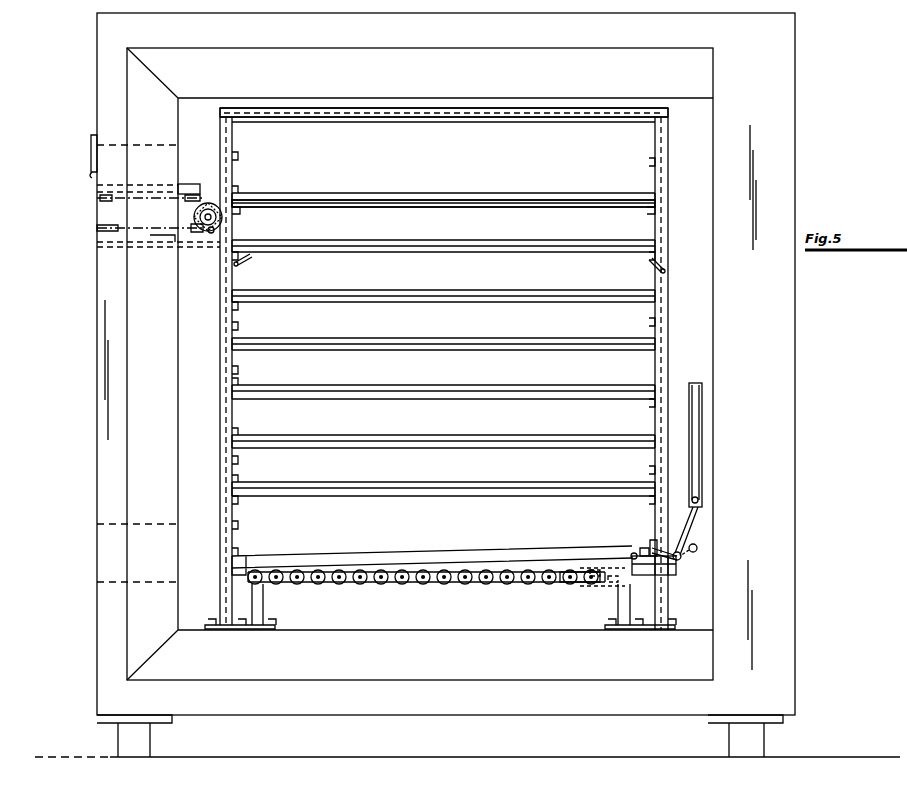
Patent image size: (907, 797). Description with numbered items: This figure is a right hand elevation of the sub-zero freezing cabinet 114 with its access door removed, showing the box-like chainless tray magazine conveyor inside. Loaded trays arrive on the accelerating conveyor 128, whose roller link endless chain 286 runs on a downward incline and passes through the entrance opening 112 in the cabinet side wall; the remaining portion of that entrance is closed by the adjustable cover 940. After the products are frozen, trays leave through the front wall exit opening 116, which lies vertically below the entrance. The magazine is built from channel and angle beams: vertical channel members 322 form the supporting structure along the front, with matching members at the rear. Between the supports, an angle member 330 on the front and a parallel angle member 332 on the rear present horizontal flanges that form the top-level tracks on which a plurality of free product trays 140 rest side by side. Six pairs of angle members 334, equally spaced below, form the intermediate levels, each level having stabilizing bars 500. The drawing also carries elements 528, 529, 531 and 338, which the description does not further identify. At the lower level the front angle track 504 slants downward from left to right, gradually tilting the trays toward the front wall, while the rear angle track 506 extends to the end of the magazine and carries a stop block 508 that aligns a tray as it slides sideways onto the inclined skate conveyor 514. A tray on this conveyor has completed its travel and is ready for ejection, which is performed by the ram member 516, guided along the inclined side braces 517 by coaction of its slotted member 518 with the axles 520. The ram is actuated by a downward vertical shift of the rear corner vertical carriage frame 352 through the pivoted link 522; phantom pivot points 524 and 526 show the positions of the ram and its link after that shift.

The sub-zero freezing cabinet 114 is at (80, 58).
The entrance opening 112 is at (148, 152).
The front wall exit opening 116 is at (148, 527).
The adjustable cover 940 is at (91, 142).
The roller link type endless chain 286 is at (118, 203).
The accelerating conveyor 128 is at (193, 249).
The vertical channel member 322 is at (220, 424).
The rack top bar 528 is at (446, 108).
The product tray 140 is at (189, 184).
The tray support bracket 531 is at (234, 154).
The stabilizing bars 500 is at (234, 188).
The angle members 334 is at (236, 256).
The latch pin 529 is at (240, 268).
The angle member 330 is at (234, 214).
The tray bottom plate 338 is at (395, 207).
The angle member 332 is at (648, 214).
The front angle track 504 is at (242, 556).
The inclined skate conveyor 514 is at (452, 586).
The inclined side braces 517 is at (560, 584).
The axles 520 is at (608, 584).
The phantom pivot point 526 is at (630, 553).
The rear angle track 506 is at (653, 540).
The stop block 508 is at (644, 548).
The slotted member 518 is at (672, 575).
The ram member 516 is at (676, 556).
The phantom pivot point 524 is at (700, 548).
The pivoted link 522 is at (690, 520).
The rear corner vertical carriage frame 352 is at (703, 447).